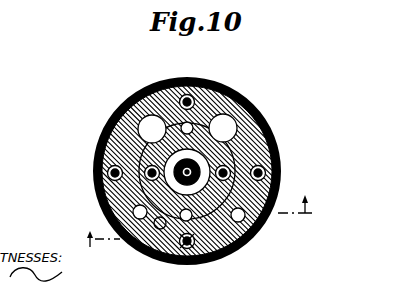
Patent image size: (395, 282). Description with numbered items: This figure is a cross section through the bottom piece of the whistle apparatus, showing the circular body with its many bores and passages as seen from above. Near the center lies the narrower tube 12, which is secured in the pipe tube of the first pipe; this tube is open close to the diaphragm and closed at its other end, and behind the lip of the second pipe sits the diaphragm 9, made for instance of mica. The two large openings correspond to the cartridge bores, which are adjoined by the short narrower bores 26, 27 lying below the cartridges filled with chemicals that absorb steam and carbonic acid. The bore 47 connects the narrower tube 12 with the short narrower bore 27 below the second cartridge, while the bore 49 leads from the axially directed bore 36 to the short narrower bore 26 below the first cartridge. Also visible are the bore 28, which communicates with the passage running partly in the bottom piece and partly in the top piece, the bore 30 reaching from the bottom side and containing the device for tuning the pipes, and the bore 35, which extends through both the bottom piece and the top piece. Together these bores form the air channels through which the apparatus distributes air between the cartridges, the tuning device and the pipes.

The narrower tube 12 is at (230, 116).
The short narrower bore 26 is at (97, 152).
The short narrower bore 27 is at (268, 160).
The bore 28 is at (268, 108).
The bore 30 is at (113, 100).
The bore 35 is at (130, 214).
The axially directed bore 36 is at (130, 256).
The bore 47 is at (262, 135).
The bore 49 is at (100, 196).
The diaphragm 9 is at (199, 222).